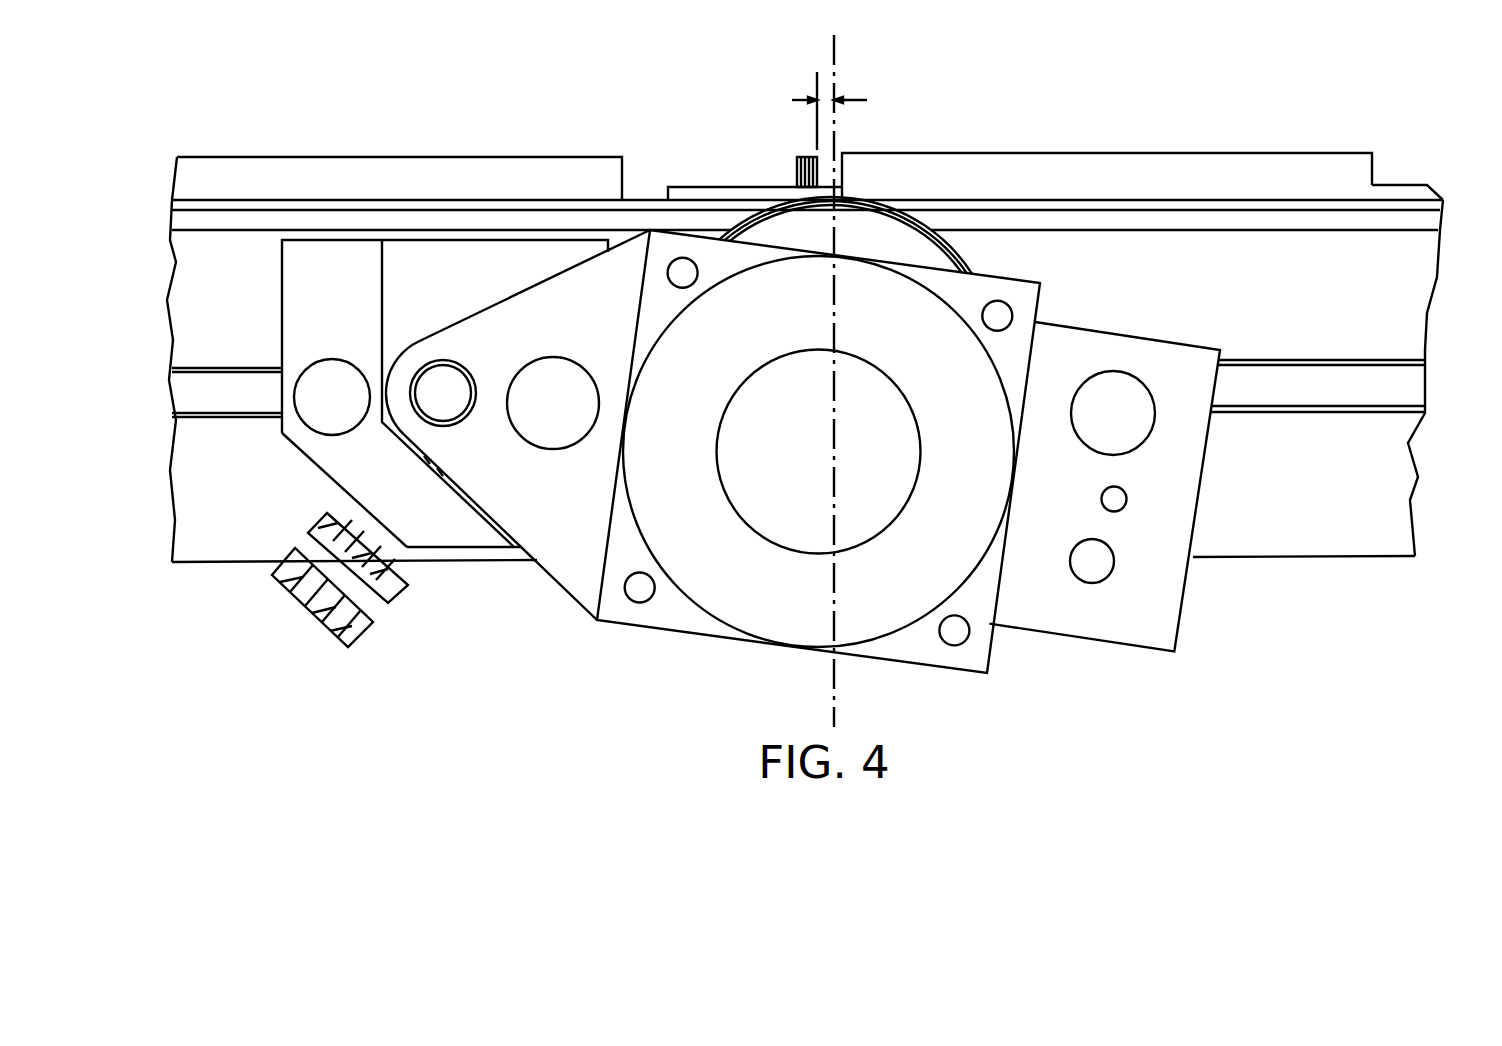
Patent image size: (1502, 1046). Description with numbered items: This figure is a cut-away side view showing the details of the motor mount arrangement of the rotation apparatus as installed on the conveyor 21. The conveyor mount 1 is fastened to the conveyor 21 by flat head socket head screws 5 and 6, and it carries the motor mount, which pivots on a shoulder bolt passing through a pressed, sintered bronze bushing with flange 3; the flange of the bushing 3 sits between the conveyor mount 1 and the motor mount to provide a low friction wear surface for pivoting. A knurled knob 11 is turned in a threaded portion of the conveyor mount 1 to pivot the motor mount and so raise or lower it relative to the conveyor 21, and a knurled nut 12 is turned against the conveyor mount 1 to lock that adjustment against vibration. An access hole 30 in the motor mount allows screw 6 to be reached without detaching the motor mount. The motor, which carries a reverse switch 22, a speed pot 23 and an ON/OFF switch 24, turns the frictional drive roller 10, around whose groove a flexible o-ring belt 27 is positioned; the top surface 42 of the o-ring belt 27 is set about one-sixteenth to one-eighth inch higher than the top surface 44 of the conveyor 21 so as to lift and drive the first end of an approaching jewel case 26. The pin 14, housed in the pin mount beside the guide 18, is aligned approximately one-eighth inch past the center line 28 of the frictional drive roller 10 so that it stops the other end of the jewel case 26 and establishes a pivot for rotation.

The conveyor mount 1 is at (310, 290).
The pressed, sintered bronze bushing with flange 3 is at (437, 410).
The flat head socket head screw 5 is at (310, 393).
The flat head socket head screw 6 is at (532, 440).
The frictional drive roller 10 is at (923, 257).
The knurled knob 11 is at (297, 583).
The knurled nut 12 is at (320, 533).
The pin 14 is at (796, 158).
The guide 18 is at (687, 187).
The conveyor 21 is at (1350, 228).
The reverse switch 22 is at (1117, 502).
The speed pot 23 is at (1128, 408).
The ON/OFF switch 24 is at (1093, 567).
The jewel case 26 is at (1330, 162).
The o-ring belt 27 is at (945, 243).
The center line 28 is at (836, 132).
The access hole 30 is at (542, 365).
The top surface 42 is at (917, 213).
The top surface 44 is at (1388, 192).